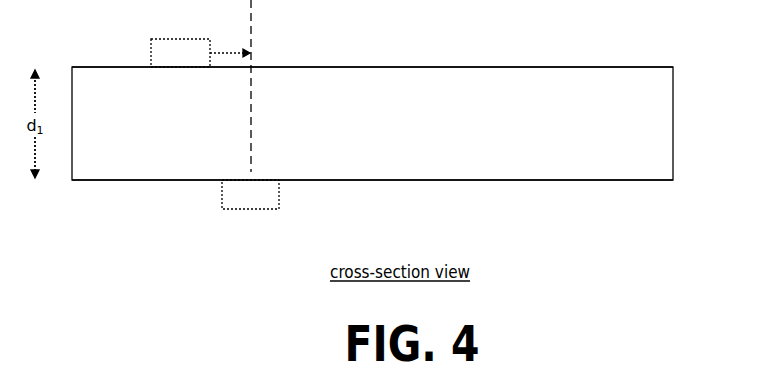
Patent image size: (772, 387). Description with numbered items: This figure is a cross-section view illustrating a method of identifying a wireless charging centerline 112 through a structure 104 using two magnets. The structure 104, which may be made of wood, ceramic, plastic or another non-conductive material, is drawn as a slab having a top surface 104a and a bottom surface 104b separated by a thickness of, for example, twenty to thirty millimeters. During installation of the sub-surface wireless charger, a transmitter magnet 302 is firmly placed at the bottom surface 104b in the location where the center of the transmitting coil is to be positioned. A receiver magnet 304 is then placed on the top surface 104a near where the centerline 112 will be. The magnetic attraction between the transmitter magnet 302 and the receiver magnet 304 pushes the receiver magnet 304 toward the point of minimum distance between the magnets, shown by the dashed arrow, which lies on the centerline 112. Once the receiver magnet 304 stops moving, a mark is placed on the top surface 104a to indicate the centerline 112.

The structure 104 is at (387, 134).
The top surface 104a is at (498, 67).
The bottom surface 104b is at (508, 181).
The centerline 112 is at (253, 33).
The transmitter magnet 302 is at (236, 205).
The receiver magnet 304 is at (195, 63).